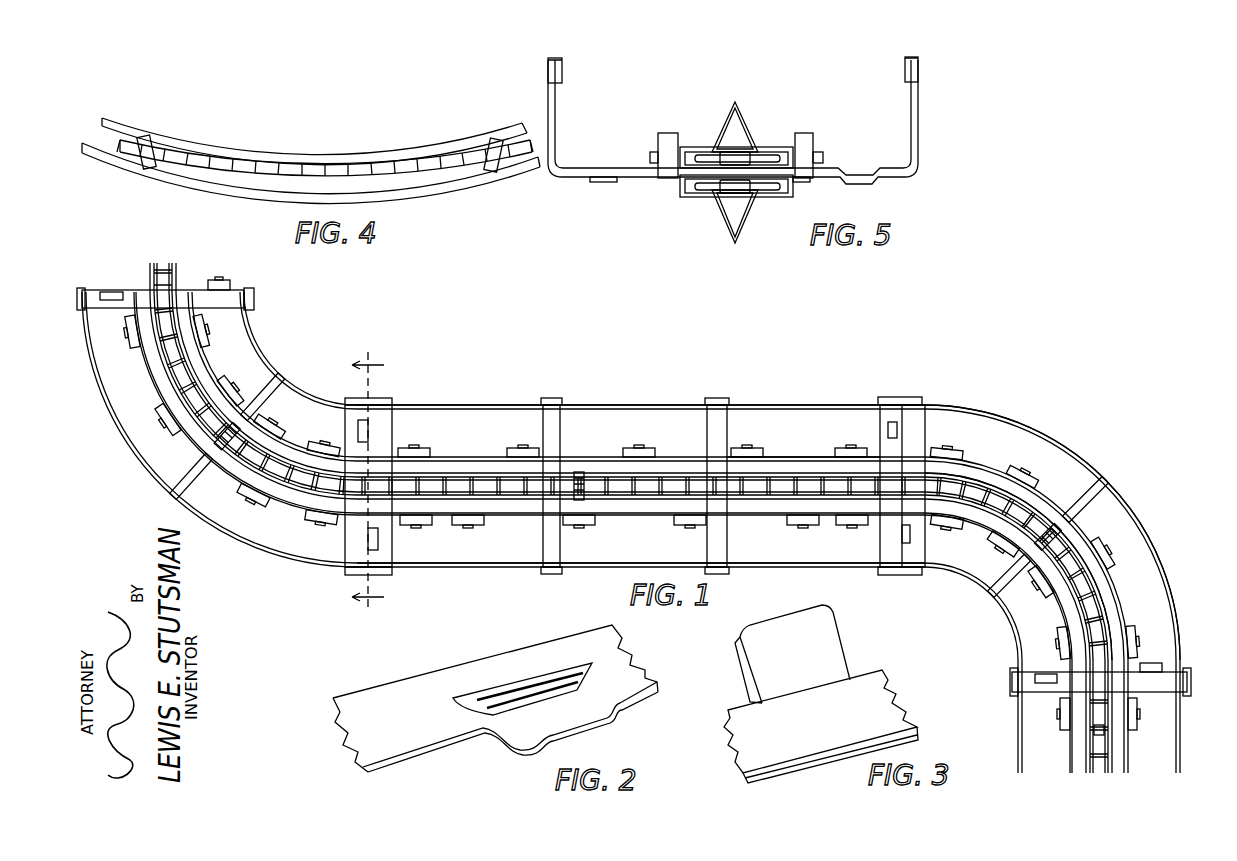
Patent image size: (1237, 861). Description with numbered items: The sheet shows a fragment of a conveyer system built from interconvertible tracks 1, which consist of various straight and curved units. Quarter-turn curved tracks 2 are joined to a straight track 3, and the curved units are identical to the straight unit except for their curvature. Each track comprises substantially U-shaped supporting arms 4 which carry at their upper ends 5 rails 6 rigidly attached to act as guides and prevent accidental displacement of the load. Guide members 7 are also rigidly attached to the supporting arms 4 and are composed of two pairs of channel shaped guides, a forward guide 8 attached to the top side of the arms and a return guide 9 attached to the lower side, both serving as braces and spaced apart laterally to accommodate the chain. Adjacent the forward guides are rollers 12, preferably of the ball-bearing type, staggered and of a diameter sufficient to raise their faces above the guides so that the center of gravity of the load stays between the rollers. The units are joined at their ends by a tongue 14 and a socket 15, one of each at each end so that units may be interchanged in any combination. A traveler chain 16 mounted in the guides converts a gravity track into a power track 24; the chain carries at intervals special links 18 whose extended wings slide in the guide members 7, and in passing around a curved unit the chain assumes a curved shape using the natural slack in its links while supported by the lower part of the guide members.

In FIG. 1, the interconvertible tracks 1 is at (635, 459).
In FIG. 1, the curved tracks 2 is at (270, 340).
In FIG. 1, the straight track 3 is at (600, 423).
In FIG. 1, the supporting arms 4 is at (273, 390).
In FIG. 5, the supporting arms 4 is at (917, 145).
In FIG. 5, the upper ends 5 is at (548, 62).
In FIG. 1, the rails 6 is at (448, 408).
In FIG. 5, the rails 6 is at (562, 73).
In FIG. 1, the guide members 7 is at (798, 447).
In FIG. 5, the guide members 7 is at (777, 203).
In FIG. 1, the forward guide 8 is at (1037, 505).
In FIG. 5, the forward guide 8 is at (767, 145).
In FIG. 5, the return guide 9 is at (695, 195).
In FIG. 1, the rollers 12 is at (163, 420).
In FIG. 1, the tongue 14 is at (220, 280).
In FIG. 3, the tongue 14 is at (827, 650).
In FIG. 1, the socket 15 is at (109, 290).
In FIG. 2, the socket 15 is at (577, 720).
In FIG. 1, the traveler chain 16 is at (167, 265).
In FIG. 4, the traveler chain 16 is at (212, 160).
In FIG. 1, the special links 18 is at (290, 463).
In FIG. 4, the special links 18 is at (493, 165).
In FIG. 1, the power track 24 is at (953, 427).